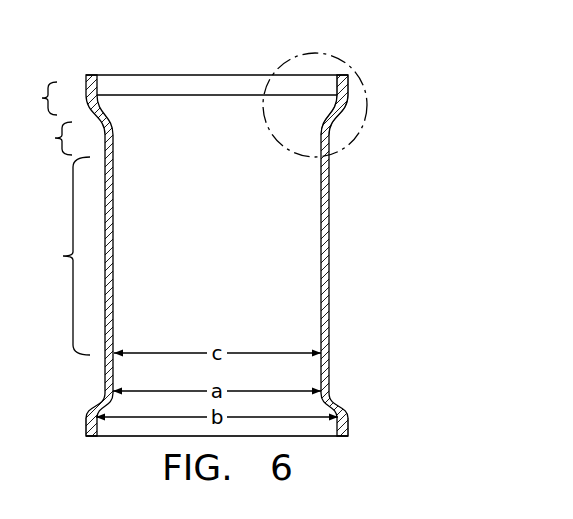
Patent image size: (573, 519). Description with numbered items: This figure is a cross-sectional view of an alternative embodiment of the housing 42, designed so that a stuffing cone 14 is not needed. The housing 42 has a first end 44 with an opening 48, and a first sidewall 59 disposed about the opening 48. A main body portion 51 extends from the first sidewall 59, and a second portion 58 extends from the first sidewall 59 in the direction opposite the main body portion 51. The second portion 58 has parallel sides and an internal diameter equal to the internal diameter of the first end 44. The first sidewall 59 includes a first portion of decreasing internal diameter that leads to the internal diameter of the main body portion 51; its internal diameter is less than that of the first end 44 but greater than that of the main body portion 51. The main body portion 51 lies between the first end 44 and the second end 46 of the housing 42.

The housing 42 is at (125, 62).
The opening 48 is at (240, 75).
The first end 44 is at (373, 79).
The stuffing cone 14 is at (355, 142).
The second portion 58 is at (32, 98).
The first sidewall 59 is at (46, 138).
The main body portion 51 is at (62, 256).
The second end 46 is at (353, 382).